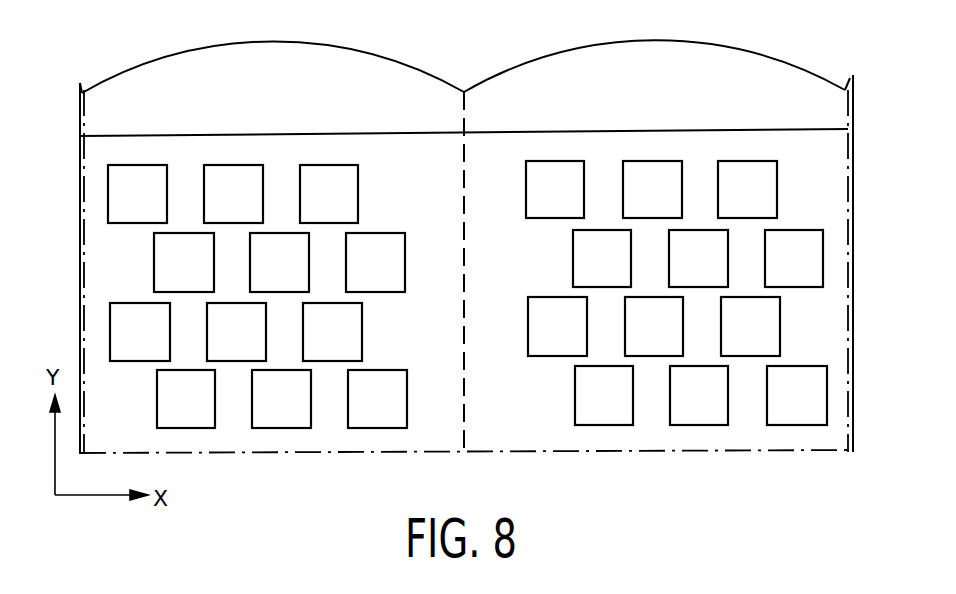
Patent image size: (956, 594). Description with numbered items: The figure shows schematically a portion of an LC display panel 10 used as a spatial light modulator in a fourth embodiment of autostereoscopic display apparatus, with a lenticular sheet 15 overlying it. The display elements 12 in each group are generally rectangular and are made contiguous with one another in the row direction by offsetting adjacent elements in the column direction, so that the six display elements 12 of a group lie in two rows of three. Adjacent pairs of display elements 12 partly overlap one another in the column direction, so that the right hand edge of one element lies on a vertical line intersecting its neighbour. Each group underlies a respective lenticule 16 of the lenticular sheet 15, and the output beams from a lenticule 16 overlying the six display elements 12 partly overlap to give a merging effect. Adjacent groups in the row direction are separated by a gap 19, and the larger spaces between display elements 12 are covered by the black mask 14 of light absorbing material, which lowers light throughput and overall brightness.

The LC display panel 10 is at (764, 458).
The display elements 12 is at (160, 260).
The black mask 14 is at (828, 337).
The lenticular sheet 15 is at (848, 110).
The lenticule 16 is at (788, 62).
The gap 19 is at (487, 432).